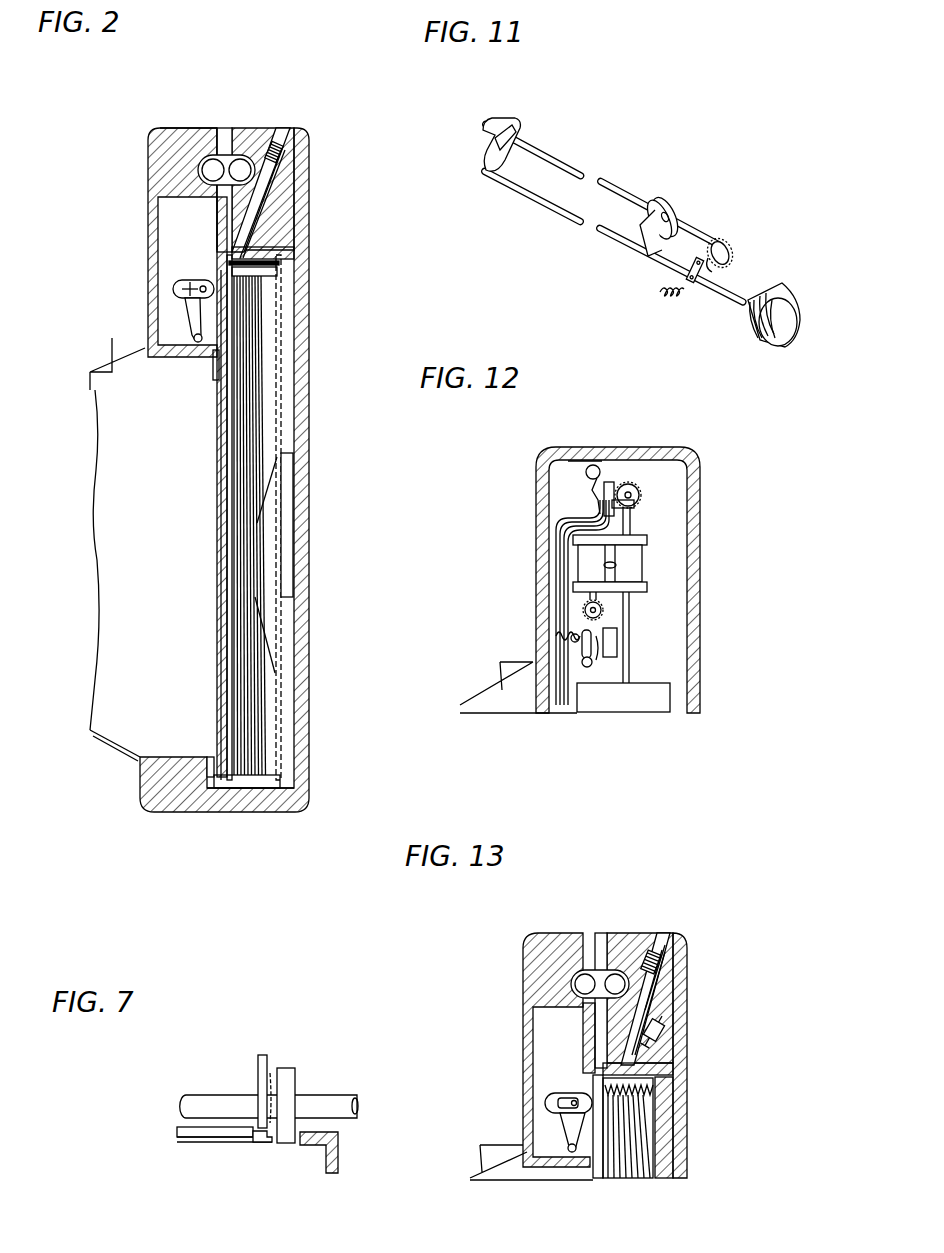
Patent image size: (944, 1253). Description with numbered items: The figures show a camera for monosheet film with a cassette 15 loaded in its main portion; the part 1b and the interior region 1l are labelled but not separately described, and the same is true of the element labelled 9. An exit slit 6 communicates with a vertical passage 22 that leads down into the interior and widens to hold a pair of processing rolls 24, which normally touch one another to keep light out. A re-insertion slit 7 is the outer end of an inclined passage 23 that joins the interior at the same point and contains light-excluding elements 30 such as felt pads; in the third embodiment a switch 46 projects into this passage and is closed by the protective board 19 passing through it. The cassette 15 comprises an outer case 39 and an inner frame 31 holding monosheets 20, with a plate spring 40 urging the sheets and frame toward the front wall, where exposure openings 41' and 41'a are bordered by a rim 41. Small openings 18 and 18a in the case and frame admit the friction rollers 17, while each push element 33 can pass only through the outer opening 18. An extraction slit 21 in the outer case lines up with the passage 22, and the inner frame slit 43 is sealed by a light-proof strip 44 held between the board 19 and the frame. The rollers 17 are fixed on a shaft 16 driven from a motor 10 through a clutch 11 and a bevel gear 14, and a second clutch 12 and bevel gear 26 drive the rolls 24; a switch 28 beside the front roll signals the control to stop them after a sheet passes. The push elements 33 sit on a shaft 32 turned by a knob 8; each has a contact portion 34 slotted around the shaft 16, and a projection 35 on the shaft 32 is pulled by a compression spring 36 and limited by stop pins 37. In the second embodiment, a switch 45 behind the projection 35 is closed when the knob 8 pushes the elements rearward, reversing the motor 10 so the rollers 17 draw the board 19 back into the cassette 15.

In FIG. 2, the housing top wall 1b is at (172, 128).
In FIG. 2, the mouth portion 1l is at (125, 548).
In FIG. 2, the exit slit 6 is at (224, 128).
In FIG. 2, the re-insertion slit 7 is at (276, 140).
In FIG. 13, the re-insertion slit 7 is at (665, 948).
In FIG. 11, the knob 8 is at (782, 330).
In FIG. 2, the housing 9 is at (309, 285).
In FIG. 12, the housing 9 is at (618, 580).
In FIG. 13, the housing 9 is at (683, 1125).
In FIG. 12, the motor 10 is at (648, 695).
In FIG. 7, the motor 10 is at (196, 1105).
In FIG. 12, the electromagnetic clutch 11 is at (582, 552).
In FIG. 12, the electromagnetic clutch 12 is at (637, 560).
In FIG. 11, the bevel gear 14 is at (725, 240).
In FIG. 12, the bevel gear 14 is at (586, 604).
In FIG. 13, the cassette 15 is at (665, 1150).
In FIG. 7, the cassette 15 is at (188, 1144).
In FIG. 2, the shaft 16 is at (182, 292).
In FIG. 11, the shaft 16 is at (718, 192).
In FIG. 2, the friction roller 17 is at (193, 312).
In FIG. 11, the friction roller 17 is at (500, 122).
In FIG. 13, the friction roller 17 is at (575, 1092).
In FIG. 7, the friction roller 17 is at (290, 1092).
In FIG. 2, the small rectangular openings 18 is at (222, 277).
In FIG. 7, the small rectangular openings 18 is at (266, 1138).
In FIG. 2, the openings 18a is at (230, 296).
In FIG. 7, the openings 18a is at (296, 1145).
In FIG. 2, the protective board 19 is at (224, 268).
In FIG. 13, the protective board 19 is at (598, 1120).
In FIG. 2, the monosheets 20 is at (262, 320).
In FIG. 13, the monosheets 20 is at (640, 1120).
In FIG. 2, the extraction slit 21 is at (218, 245).
In FIG. 13, the extraction slit 21 is at (590, 1055).
In FIG. 2, the vertical passage 22 is at (232, 150).
In FIG. 13, the vertical passage 22 is at (600, 945).
In FIG. 2, the inclined passage 23 is at (262, 182).
In FIG. 13, the inclined passage 23 is at (662, 990).
In FIG. 2, the processing rolls 24 is at (204, 166).
In FIG. 13, the processing rolls 24 is at (578, 980).
In FIG. 12, the bevel gear 26 is at (642, 495).
In FIG. 12, the switch 28 is at (607, 492).
In FIG. 2, the light-excluding elements 30 is at (285, 150).
In FIG. 13, the light-excluding elements 30 is at (640, 950).
In FIG. 2, the inner frame 31 is at (218, 392).
In FIG. 13, the inner frame 31 is at (615, 1120).
In FIG. 7, the inner frame 31 is at (250, 1143).
In FIG. 2, the shaft 32 is at (217, 362).
In FIG. 11, the shaft 32 is at (725, 305).
In FIG. 2, the push element 33 is at (160, 357).
In FIG. 11, the push element 33 is at (510, 172).
In FIG. 13, the push element 33 is at (558, 1128).
In FIG. 7, the push element 33 is at (258, 1092).
In FIG. 7, the contact portion 34 is at (271, 1075).
In FIG. 11, the projection 35 is at (692, 282).
In FIG. 12, the projection 35 is at (585, 662).
In FIG. 11, the compression spring 36 is at (666, 292).
In FIG. 12, the compression spring 36 is at (565, 630).
In FIG. 12, the stop pins 37 is at (570, 638).
In FIG. 2, the outer case 39 is at (222, 790).
In FIG. 7, the outer case 39 is at (182, 1128).
In FIG. 2, the plate spring 40 is at (285, 425).
In FIG. 2, the rim 41 is at (181, 735).
In FIG. 2, the front opening 41' is at (124, 525).
In FIG. 2, the opening 41'a is at (127, 684).
In FIG. 2, the extraction slit 43 is at (258, 263).
In FIG. 2, the light-proof flexible strip 44 is at (262, 248).
In FIG. 13, the light-proof flexible strip 44 is at (640, 1073).
In FIG. 11, the switch 45 is at (712, 266).
In FIG. 12, the switch 45 is at (612, 638).
In FIG. 13, the switch 46 is at (664, 1035).